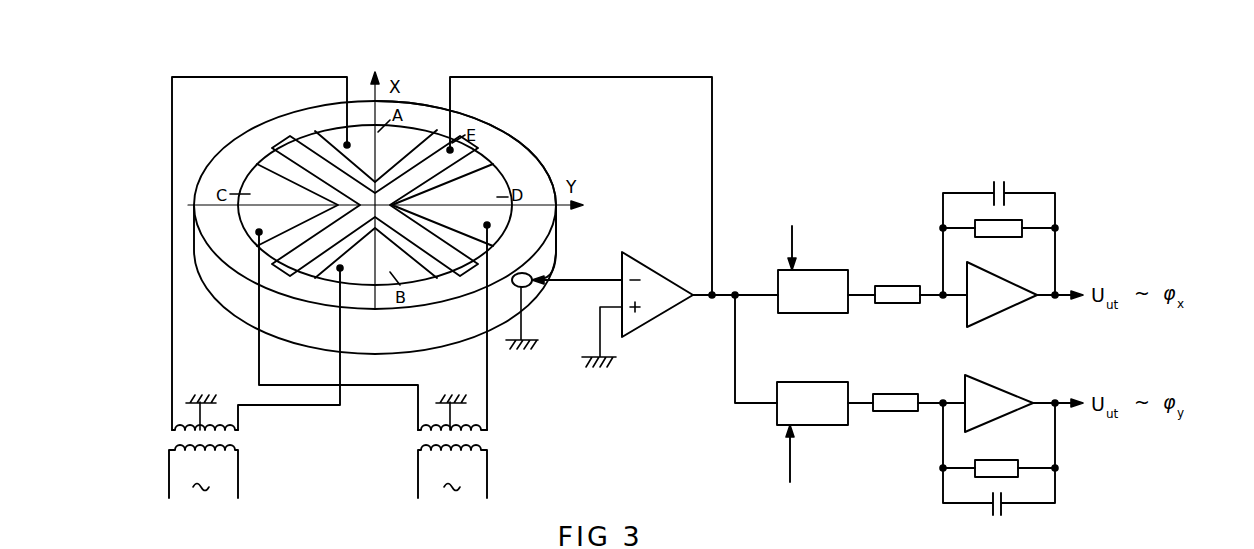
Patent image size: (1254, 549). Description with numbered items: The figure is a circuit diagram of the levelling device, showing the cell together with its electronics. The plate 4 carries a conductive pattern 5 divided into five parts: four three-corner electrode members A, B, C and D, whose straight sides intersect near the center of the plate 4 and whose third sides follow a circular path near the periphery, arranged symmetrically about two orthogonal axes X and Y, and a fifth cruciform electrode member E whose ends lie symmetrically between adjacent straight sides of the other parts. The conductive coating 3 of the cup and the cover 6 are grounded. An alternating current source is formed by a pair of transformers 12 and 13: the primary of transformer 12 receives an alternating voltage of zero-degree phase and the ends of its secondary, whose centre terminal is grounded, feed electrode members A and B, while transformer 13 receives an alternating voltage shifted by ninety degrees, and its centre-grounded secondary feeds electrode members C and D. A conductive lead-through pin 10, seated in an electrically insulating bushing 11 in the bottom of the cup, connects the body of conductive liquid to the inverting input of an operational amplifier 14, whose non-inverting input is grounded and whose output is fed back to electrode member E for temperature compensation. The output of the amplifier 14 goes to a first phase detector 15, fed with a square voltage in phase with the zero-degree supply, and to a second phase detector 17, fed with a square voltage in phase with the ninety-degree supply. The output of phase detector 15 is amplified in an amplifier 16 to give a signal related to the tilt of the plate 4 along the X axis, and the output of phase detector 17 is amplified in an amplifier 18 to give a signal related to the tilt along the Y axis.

The conductive coating 3 is at (445, 337).
The cover 6 is at (453, 352).
The plate 4 is at (527, 157).
The conductive pattern 5 is at (343, 153).
The conductive lead-through pin 10 is at (545, 278).
The electrically insulating bushing 11 is at (526, 294).
The transformer 12 is at (170, 440).
The transformer 13 is at (480, 440).
The operational amplifier 14 is at (656, 281).
The first phase detector 15 is at (830, 276).
The amplifier 16 is at (985, 310).
The second phase detector 17 is at (800, 421).
The amplifier 18 is at (995, 398).